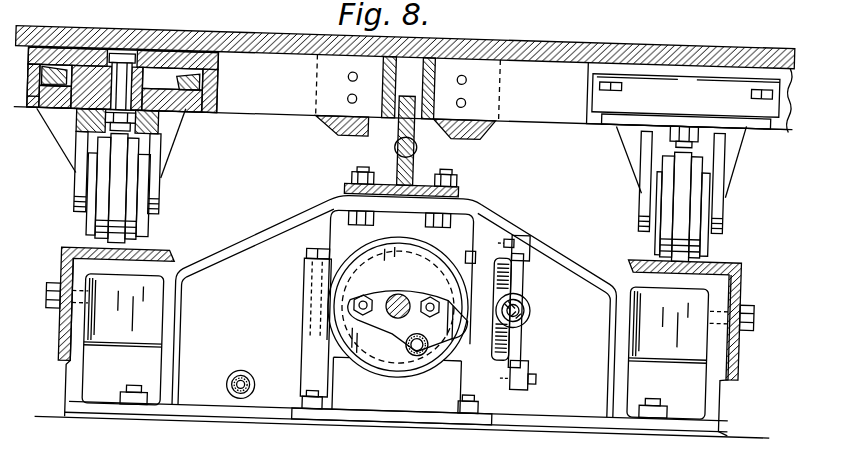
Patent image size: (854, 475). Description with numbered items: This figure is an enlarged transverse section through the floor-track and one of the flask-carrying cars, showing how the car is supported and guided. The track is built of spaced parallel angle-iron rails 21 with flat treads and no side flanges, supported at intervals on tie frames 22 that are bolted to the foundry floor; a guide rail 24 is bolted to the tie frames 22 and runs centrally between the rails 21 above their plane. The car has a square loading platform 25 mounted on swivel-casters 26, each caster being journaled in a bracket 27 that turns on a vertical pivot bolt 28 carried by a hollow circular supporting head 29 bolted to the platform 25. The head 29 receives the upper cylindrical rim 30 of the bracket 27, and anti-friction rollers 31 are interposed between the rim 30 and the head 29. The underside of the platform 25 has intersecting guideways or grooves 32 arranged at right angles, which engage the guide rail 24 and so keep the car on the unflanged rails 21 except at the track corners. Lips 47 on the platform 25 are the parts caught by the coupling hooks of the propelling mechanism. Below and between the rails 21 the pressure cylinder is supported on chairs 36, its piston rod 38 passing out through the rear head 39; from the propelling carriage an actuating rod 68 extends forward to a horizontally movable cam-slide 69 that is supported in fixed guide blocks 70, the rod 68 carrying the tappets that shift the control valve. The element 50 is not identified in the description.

The rails 21 is at (57, 277).
The tie frames 22 is at (254, 240).
The guide rail 24 is at (412, 148).
The loading platform 25 is at (552, 50).
The swivel-casters 26 is at (105, 210).
The bracket 27 is at (159, 174).
The pivot bolt 28 is at (113, 106).
The supporting head 29 is at (158, 70).
The cylindrical rim 30 is at (195, 90).
The anti-friction rollers 31 is at (55, 111).
The guideways 32 is at (390, 130).
The chairs 36 is at (355, 310).
The piston rod 38 is at (398, 322).
The rear head 39 is at (398, 307).
The lip 47 is at (333, 129).
The stud 50 is at (424, 357).
The actuating rod 68 is at (532, 310).
The cam-slide 69 is at (524, 340).
The guide blocks 70 is at (510, 243).